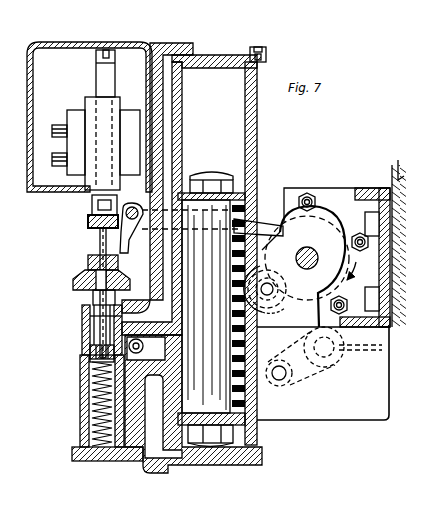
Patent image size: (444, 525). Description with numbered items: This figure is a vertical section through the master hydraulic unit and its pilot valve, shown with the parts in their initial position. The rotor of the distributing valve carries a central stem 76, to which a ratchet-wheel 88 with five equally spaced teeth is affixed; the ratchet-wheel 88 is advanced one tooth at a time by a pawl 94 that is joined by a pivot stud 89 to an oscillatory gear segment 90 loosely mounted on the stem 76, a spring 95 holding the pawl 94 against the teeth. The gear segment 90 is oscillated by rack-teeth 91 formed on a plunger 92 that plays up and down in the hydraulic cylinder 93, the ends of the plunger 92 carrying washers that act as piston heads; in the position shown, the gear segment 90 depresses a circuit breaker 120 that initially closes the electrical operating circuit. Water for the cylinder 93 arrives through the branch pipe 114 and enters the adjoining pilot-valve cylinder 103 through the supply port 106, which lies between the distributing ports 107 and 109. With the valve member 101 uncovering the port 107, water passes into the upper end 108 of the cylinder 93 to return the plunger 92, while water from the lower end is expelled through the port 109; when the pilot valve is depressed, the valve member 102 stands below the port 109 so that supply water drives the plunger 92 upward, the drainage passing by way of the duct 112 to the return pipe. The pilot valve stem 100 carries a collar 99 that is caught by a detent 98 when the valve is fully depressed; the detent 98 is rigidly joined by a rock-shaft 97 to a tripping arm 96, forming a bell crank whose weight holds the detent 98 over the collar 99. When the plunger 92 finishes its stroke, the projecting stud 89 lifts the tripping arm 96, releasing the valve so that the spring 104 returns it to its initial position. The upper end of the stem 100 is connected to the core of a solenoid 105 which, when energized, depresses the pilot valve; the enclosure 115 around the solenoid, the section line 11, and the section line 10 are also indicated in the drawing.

The cover housing 115 is at (46, 41).
The supply port 106 is at (100, 75).
The solenoid 105 is at (90, 117).
The distributing port 107 is at (168, 72).
The upper end of the operating cylinder 108 is at (214, 80).
The hydraulic cylinder 93 is at (257, 124).
The rock-shaft 97 is at (90, 207).
The collar 99 is at (88, 222).
The valve stem 10 is at (99, 240).
The detent 98 is at (100, 260).
The stem 100 is at (90, 270).
The valve member 101 is at (93, 300).
The duct 112 is at (85, 316).
The cylinder 103 is at (90, 320).
The valve member 102 is at (93, 353).
The spring 104 is at (93, 395).
The distributing port 109 is at (165, 455).
The branch pipe 114 is at (148, 347).
The plunger 92 is at (193, 309).
The rack-teeth 91 is at (243, 380).
The ratchet-wheel 88 is at (291, 240).
The central stem 76 is at (307, 250).
The tripping arm 96 is at (260, 222).
The pawl 94 is at (262, 272).
The pivot stud 89 is at (272, 288).
The spring 95 is at (273, 323).
The circuit breaker 120 is at (337, 340).
The oscillatory gear segment 90 is at (275, 366).
The section line 11- 11 is at (305, 186).